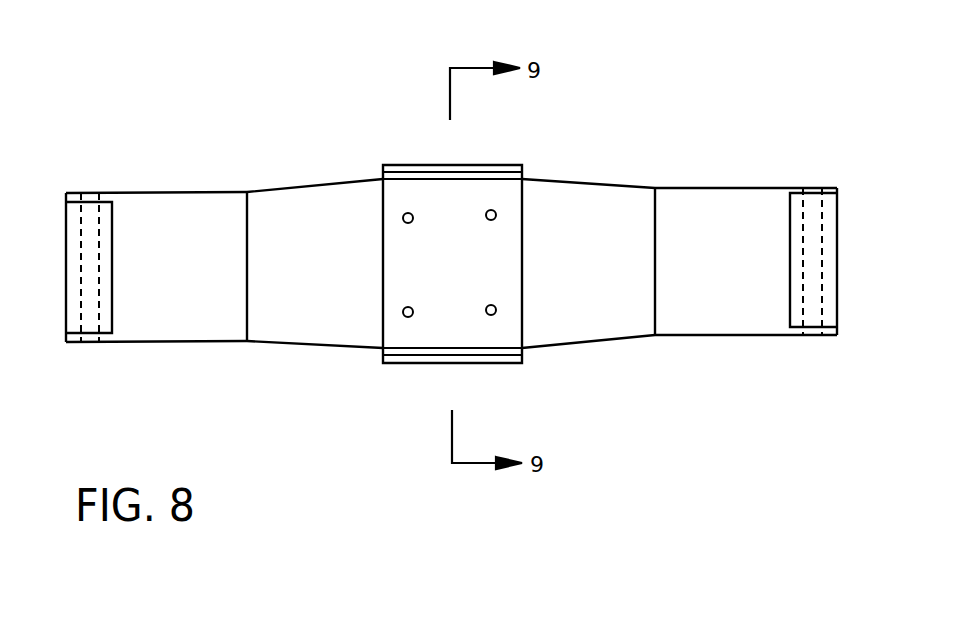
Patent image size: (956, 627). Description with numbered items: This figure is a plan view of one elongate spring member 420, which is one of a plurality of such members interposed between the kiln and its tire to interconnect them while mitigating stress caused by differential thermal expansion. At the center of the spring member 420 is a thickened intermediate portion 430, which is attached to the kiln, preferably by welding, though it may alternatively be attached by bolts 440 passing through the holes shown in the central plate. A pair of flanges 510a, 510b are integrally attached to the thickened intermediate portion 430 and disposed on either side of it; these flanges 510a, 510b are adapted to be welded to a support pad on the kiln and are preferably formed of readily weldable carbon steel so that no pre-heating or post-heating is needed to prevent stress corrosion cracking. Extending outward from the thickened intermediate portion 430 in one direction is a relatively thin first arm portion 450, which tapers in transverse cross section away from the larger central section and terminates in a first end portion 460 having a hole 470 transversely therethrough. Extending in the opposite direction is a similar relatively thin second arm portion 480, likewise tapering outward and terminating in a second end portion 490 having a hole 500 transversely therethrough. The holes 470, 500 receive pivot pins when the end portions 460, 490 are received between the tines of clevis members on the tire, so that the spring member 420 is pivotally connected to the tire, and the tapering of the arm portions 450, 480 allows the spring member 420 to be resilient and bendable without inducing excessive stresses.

The spring member 420 is at (295, 340).
The thickened intermediate portion 430 is at (500, 335).
The bolts 440 is at (412, 213).
The first arm portion 450 is at (177, 333).
The first end portion 460 is at (90, 342).
The hole 470 is at (82, 287).
The second arm portion 480 is at (675, 325).
The second end portion 490 is at (748, 335).
The hole 500 is at (823, 275).
The flange 510a is at (410, 362).
The flange 510b is at (471, 242).